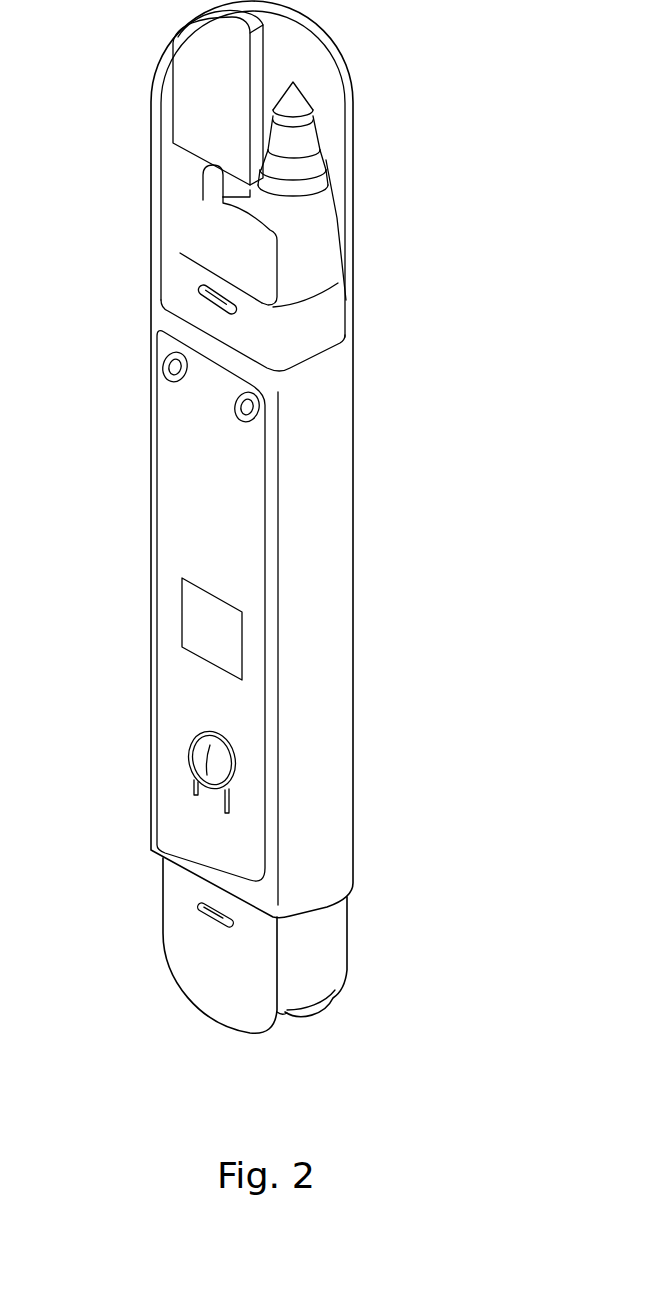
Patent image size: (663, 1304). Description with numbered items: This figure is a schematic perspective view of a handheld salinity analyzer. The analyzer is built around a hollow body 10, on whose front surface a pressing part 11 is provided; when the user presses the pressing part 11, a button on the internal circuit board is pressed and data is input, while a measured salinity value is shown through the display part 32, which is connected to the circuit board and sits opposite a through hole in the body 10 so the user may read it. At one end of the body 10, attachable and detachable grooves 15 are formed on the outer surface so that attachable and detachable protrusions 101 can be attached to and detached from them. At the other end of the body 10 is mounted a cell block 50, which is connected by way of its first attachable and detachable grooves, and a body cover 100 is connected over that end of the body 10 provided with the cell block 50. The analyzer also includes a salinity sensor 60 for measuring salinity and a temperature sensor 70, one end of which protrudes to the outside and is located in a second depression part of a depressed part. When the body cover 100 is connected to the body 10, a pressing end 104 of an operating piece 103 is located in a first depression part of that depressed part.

The body 10 is at (360, 602).
The pressing part 11 is at (207, 758).
The attachable and detachable grooves 15 is at (207, 917).
The display part 32 is at (203, 627).
The cell block 50 is at (337, 218).
The salinity sensor 60 is at (298, 110).
The temperature sensor 70 is at (245, 183).
The body cover 100 is at (358, 165).
The attachable and detachable protrusions 101 is at (195, 295).
The operating piece 103 is at (260, 50).
The pressing end 104 is at (205, 168).